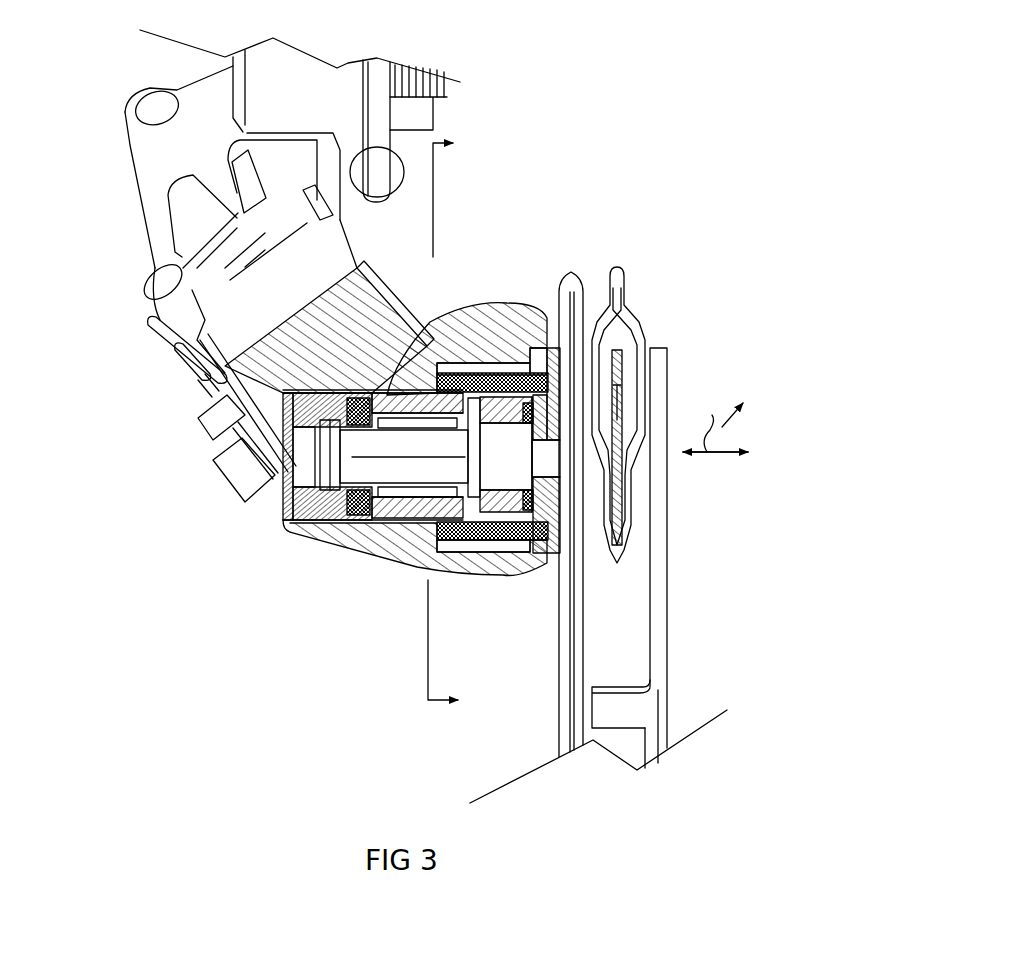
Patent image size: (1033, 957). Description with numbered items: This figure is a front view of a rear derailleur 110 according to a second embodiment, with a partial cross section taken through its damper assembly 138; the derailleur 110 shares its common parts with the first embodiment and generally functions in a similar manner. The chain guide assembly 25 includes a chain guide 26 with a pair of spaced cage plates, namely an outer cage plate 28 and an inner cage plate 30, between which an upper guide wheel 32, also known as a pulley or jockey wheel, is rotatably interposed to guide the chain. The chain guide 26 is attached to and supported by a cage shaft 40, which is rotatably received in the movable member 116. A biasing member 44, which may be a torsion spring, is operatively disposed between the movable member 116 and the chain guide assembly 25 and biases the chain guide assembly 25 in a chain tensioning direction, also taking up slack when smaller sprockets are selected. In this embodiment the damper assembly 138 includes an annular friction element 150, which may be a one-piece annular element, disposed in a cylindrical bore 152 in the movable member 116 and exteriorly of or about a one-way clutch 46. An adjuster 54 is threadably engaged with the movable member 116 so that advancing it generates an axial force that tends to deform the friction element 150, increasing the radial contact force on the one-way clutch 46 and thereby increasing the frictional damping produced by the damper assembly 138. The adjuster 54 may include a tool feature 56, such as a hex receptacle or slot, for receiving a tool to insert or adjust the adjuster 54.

The chain guide assembly 25 is at (693, 332).
The chain guide 26 is at (553, 692).
The outer cage plate 28 is at (567, 573).
The inner cage plate 30 is at (643, 707).
The upper guide wheel 32 is at (622, 287).
The cage shaft 40 is at (308, 528).
The biasing member 44 is at (505, 375).
The one-way clutch 46 is at (412, 492).
The adjuster 54 is at (300, 474).
The tool feature 56 is at (280, 460).
The derailleur 110 is at (517, 227).
The movable member 116 is at (320, 340).
The damper assembly 138 is at (363, 542).
The annular friction element 150 is at (395, 393).
The cylindrical bore 152 is at (426, 204).